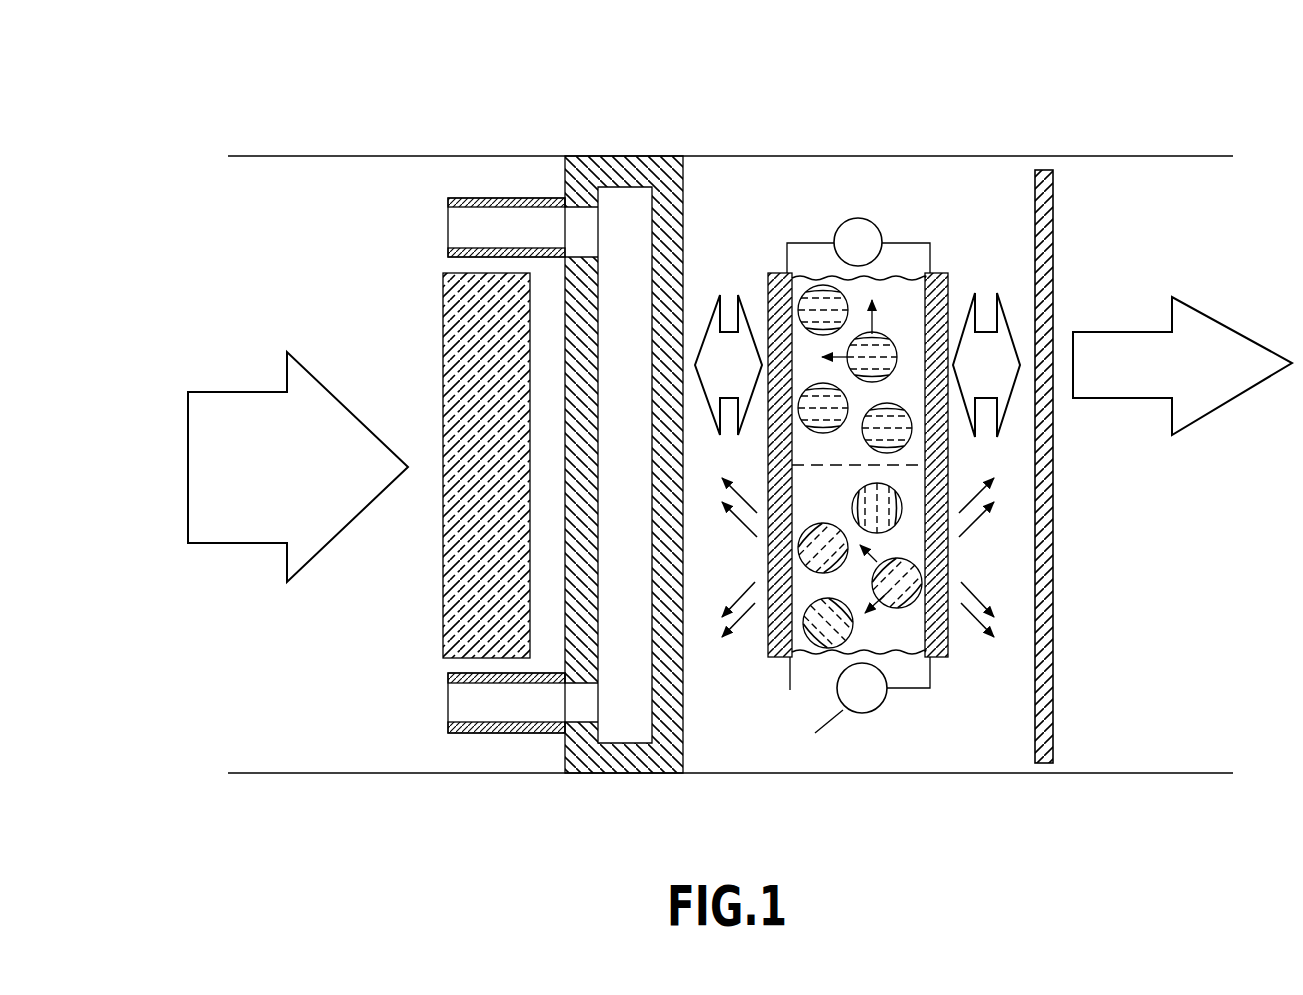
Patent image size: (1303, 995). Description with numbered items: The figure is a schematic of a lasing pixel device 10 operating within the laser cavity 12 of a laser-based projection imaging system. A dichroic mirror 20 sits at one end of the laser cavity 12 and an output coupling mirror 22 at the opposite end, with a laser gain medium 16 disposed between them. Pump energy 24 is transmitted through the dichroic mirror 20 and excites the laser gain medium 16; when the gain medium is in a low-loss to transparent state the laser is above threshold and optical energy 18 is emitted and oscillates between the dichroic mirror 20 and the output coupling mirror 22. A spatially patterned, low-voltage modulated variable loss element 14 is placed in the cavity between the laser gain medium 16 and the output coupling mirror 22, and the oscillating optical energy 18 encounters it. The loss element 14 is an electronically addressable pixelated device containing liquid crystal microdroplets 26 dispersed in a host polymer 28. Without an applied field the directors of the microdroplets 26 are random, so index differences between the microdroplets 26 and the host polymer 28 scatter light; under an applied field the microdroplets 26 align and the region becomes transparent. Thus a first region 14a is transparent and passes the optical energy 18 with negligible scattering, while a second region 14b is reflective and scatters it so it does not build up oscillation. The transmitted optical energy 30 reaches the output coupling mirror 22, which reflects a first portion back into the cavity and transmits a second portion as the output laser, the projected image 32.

The lasing pixel device 10 is at (1118, 108).
The laser cavity 12 is at (963, 745).
The variable loss element 14 is at (899, 444).
The first region 14a is at (948, 440).
The second region 14b is at (948, 636).
The laser gain medium 16 is at (630, 161).
The optical energy 18 is at (738, 294).
The dichroic mirror 20 is at (442, 271).
The output coupling mirror 22 is at (1053, 243).
The pump energy 24 is at (207, 390).
The microdroplets 26 is at (805, 657).
The host polymer 28 is at (810, 500).
The transmitted optical energy 30 is at (975, 297).
The projected image 32 is at (1238, 332).